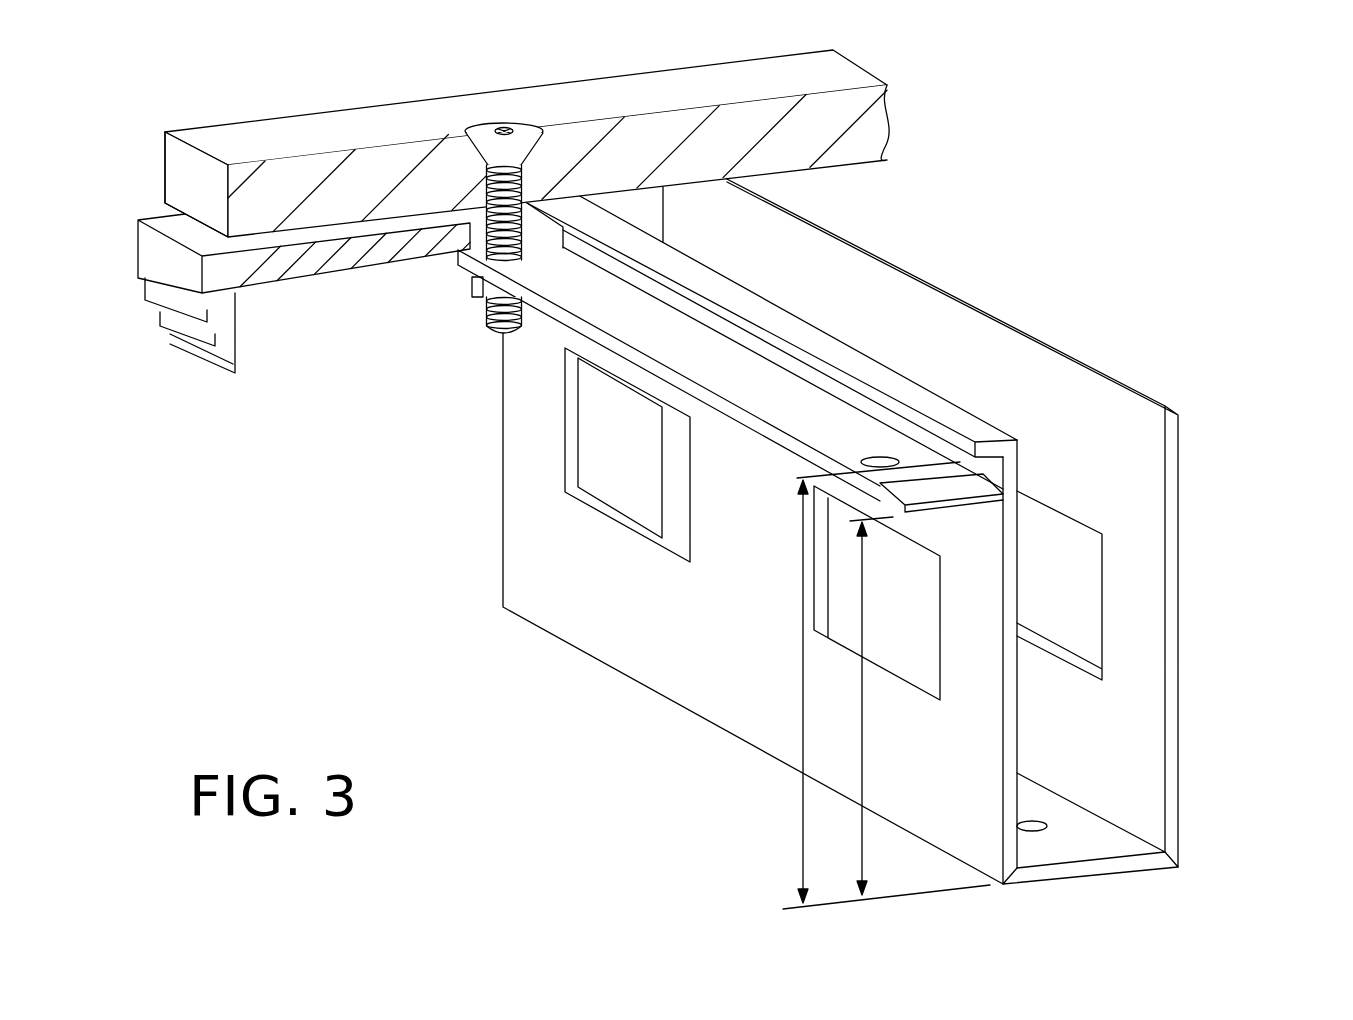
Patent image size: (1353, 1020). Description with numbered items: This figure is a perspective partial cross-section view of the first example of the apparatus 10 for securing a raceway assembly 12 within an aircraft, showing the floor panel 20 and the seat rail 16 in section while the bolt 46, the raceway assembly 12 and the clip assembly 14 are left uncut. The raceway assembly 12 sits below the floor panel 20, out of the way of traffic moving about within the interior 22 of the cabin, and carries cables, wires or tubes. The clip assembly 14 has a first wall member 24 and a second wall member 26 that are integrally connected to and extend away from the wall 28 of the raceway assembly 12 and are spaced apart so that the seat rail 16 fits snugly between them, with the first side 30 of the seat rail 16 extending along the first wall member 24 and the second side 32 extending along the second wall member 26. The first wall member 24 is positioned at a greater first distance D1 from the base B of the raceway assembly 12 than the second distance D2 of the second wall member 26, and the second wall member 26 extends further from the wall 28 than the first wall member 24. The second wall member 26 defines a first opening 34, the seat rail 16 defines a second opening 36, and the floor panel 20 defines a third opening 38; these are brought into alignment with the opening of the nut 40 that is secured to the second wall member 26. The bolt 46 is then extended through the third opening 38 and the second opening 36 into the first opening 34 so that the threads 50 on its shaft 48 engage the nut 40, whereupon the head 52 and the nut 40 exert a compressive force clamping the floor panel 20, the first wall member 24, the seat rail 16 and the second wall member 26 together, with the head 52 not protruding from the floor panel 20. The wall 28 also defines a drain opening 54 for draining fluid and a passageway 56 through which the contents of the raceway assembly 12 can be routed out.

The apparatus 10 is at (962, 251).
The raceway assembly 12 is at (649, 647).
The clip assembly 14 is at (1041, 436).
The seat rail 16 is at (360, 263).
The floor panel 20 is at (707, 83).
The interior 22 is at (386, 58).
The first wall member 24 is at (887, 381).
The second wall member 26 is at (753, 390).
The wall 28 is at (696, 675).
The first side 30 is at (437, 220).
The second side 32 is at (287, 283).
The first opening 34 is at (657, 272).
The second opening 36 is at (483, 260).
The third opening 38 is at (541, 181).
The nut 40 is at (483, 293).
The bolt 46 is at (516, 82).
The shaft 48 is at (541, 232).
The threads 50 is at (490, 320).
The head 52 is at (522, 127).
The drain opening 54 is at (1020, 833).
The passageway 56 is at (591, 469).
The first distance D1 is at (798, 793).
The second distance D2 is at (864, 750).
The base B is at (1133, 879).